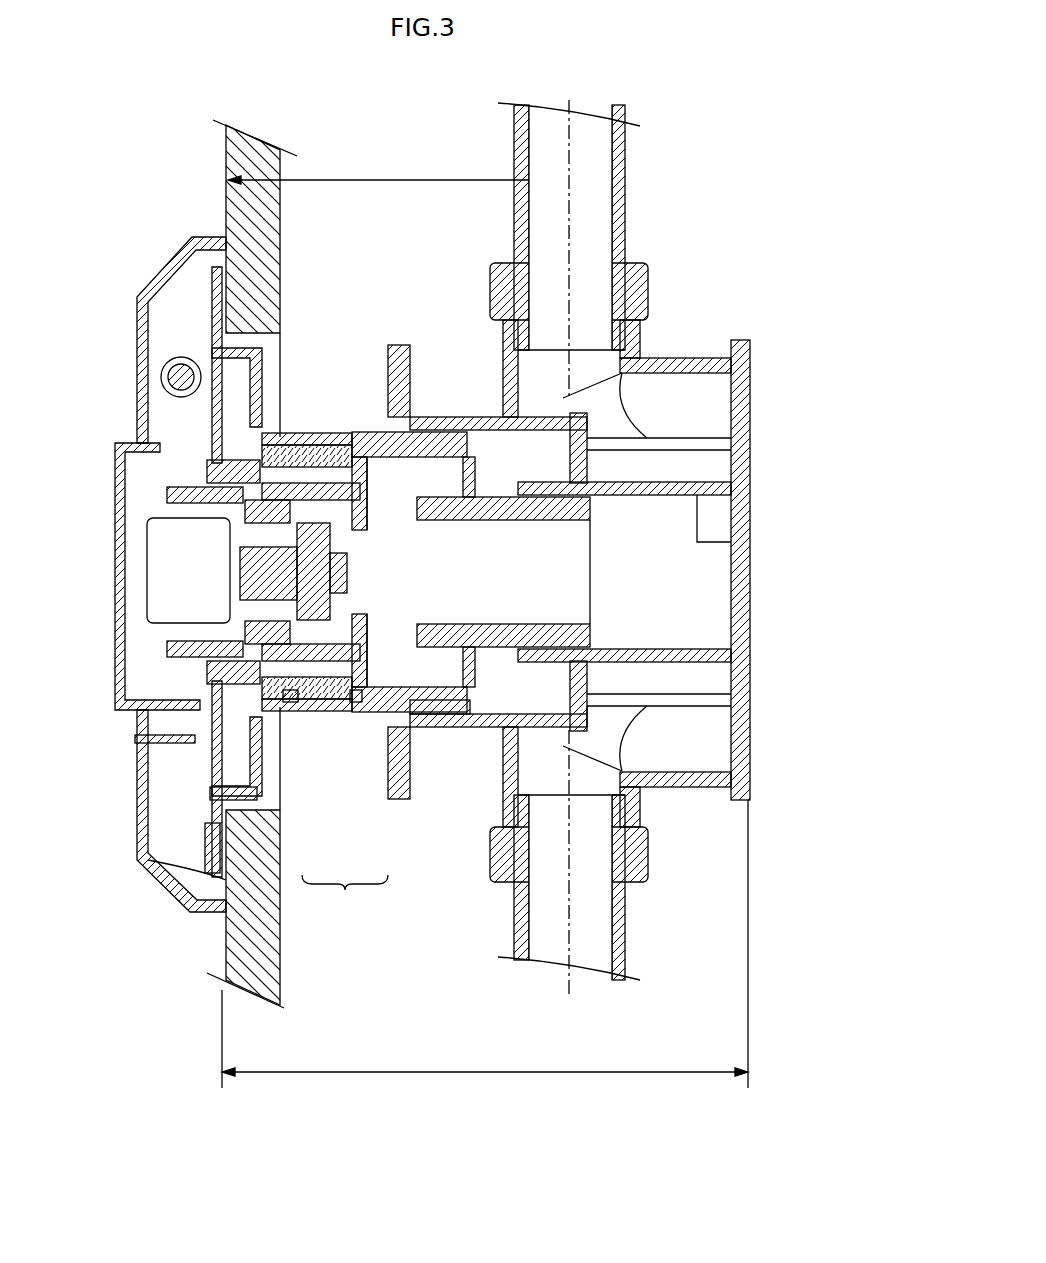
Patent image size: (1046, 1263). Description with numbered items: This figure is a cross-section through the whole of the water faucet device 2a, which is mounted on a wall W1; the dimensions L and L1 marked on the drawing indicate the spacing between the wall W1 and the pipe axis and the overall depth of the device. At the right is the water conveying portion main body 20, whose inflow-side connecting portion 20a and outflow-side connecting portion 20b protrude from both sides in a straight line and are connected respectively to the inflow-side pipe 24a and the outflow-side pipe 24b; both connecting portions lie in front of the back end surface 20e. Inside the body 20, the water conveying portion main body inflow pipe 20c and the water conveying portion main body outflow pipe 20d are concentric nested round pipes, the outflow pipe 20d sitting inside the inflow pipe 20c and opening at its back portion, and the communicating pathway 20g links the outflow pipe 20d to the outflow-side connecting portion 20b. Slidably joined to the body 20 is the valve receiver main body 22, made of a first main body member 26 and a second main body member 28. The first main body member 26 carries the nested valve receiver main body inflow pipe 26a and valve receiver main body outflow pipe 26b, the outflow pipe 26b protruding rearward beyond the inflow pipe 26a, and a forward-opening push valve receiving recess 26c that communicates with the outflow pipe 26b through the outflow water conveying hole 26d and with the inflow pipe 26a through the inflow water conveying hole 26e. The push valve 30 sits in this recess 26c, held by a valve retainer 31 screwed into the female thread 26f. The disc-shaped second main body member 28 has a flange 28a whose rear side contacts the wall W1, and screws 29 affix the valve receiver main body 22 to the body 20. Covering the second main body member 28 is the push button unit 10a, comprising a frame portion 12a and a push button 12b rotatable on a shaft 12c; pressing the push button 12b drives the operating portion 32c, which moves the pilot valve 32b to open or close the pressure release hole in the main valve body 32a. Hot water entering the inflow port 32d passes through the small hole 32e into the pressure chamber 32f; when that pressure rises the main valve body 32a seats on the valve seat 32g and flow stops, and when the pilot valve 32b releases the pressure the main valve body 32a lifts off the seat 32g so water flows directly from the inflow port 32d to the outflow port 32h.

The wall W1 is at (240, 210).
The dimension L is at (398, 166).
The dimension L1 is at (485, 944).
The water faucet device 2a is at (443, 903).
The push button unit 10a is at (130, 842).
The frame portion 12a is at (137, 783).
The push button 12b is at (135, 548).
The shaft 12c is at (168, 378).
The water conveying portion main body 20 is at (687, 357).
The inflow-side connecting portion 20a is at (613, 815).
The outflow-side connecting portion 20b is at (533, 303).
The water conveying portion main body inflow pipe 20c is at (545, 712).
The water conveying portion main body outflow pipe 20d is at (700, 650).
The back end surface 20e is at (750, 530).
The communicating pathway 20g is at (718, 493).
The valve receiver main body 22 is at (345, 898).
The inflow-side pipe 24a is at (620, 925).
The outflow-side pipe 24b is at (620, 198).
The first main body member 26 is at (373, 800).
The valve receiver main body inflow pipe 26a is at (435, 640).
The valve receiver main body outflow pipe 26b is at (563, 617).
The push valve receiving recess 26c is at (283, 435).
The outflow water conveying hole 26d is at (483, 527).
The inflow water conveying hole 26e is at (395, 450).
The female thread 26f is at (160, 432).
The second main body member 28 is at (283, 805).
The flange 28a is at (240, 800).
The screws 29 is at (265, 728).
The push valve 30 is at (297, 695).
The valve retainer 31 is at (170, 495).
The main valve body 32a is at (317, 667).
The pilot valve 32b is at (240, 600).
The operating portion 32c is at (222, 540).
The inflow port 32d is at (372, 447).
The small hole 32e is at (333, 477).
The pressure chamber 32f is at (302, 477).
The valve seat 32g is at (353, 690).
The outflow port 32h is at (478, 700).